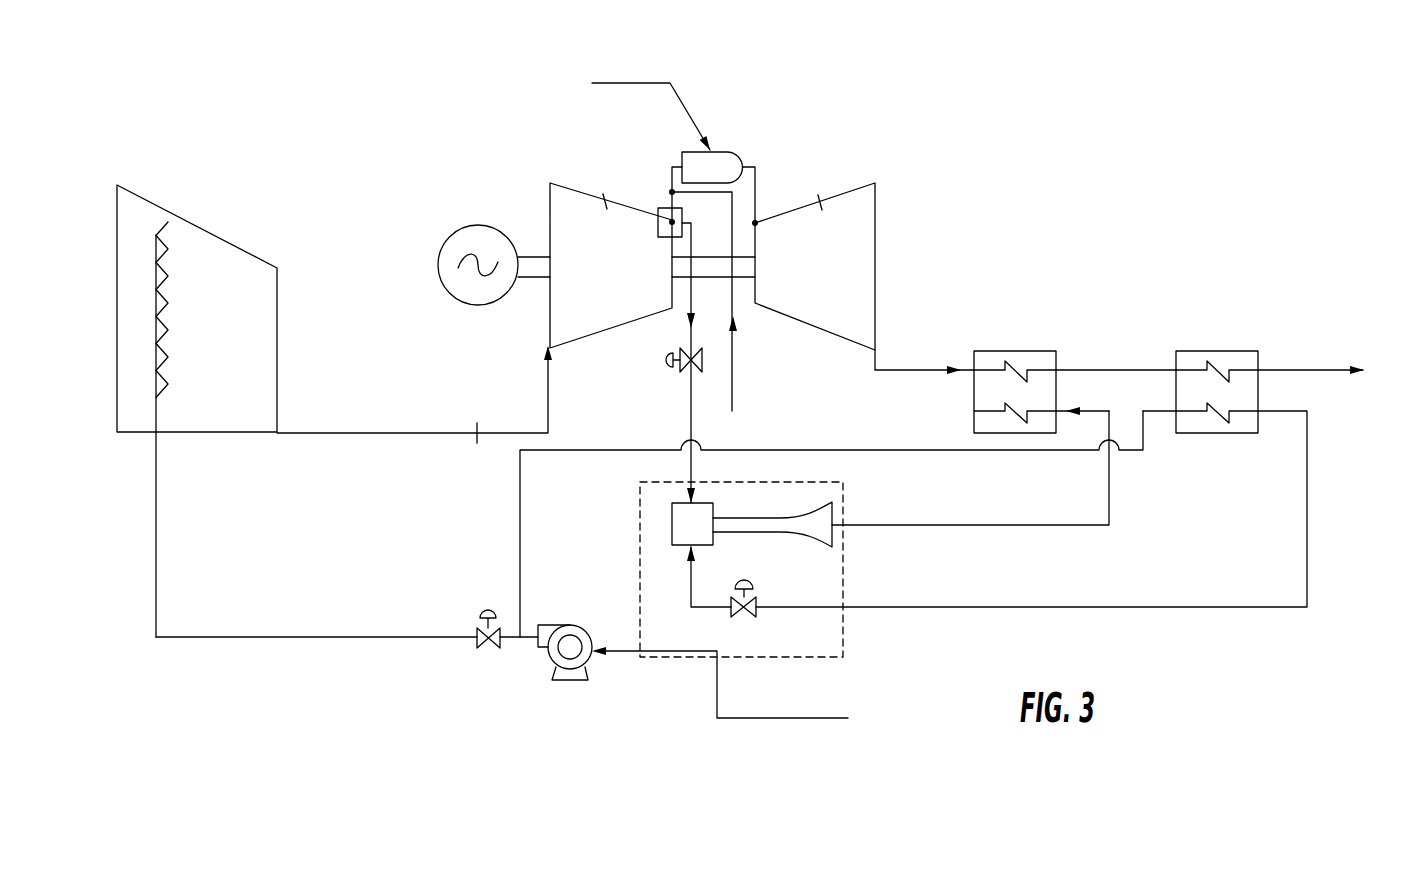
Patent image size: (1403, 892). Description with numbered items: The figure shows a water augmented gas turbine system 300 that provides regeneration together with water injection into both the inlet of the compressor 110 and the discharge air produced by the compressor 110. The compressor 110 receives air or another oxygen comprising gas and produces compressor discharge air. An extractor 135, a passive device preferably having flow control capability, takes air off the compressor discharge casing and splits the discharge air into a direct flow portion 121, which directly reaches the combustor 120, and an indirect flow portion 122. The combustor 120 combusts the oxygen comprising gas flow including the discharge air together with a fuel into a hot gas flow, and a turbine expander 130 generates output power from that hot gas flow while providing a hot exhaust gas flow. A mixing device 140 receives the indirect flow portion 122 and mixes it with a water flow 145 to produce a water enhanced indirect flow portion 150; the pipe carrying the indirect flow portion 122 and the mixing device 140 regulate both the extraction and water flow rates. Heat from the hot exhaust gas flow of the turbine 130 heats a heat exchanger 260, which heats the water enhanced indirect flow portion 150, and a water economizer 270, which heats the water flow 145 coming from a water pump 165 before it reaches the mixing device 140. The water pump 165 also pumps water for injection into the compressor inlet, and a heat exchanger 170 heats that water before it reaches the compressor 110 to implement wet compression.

The compressor 110 is at (560, 197).
The combustor 120 is at (720, 150).
The direct flow portion 121 is at (672, 192).
The indirect flow portion 122 is at (688, 300).
The turbine expander 130 is at (855, 227).
The extractor 135 is at (672, 222).
The mixing device 140 is at (843, 625).
The water flow 145 is at (578, 450).
The water enhanced indirect flow portion 150 is at (1072, 525).
The water pump 165 is at (545, 650).
The heat exchanger 170 is at (117, 370).
The heat exchanger 260 is at (995, 351).
The water economizer 270 is at (1258, 365).
The water augmented gas turbine system 300 is at (1012, 193).